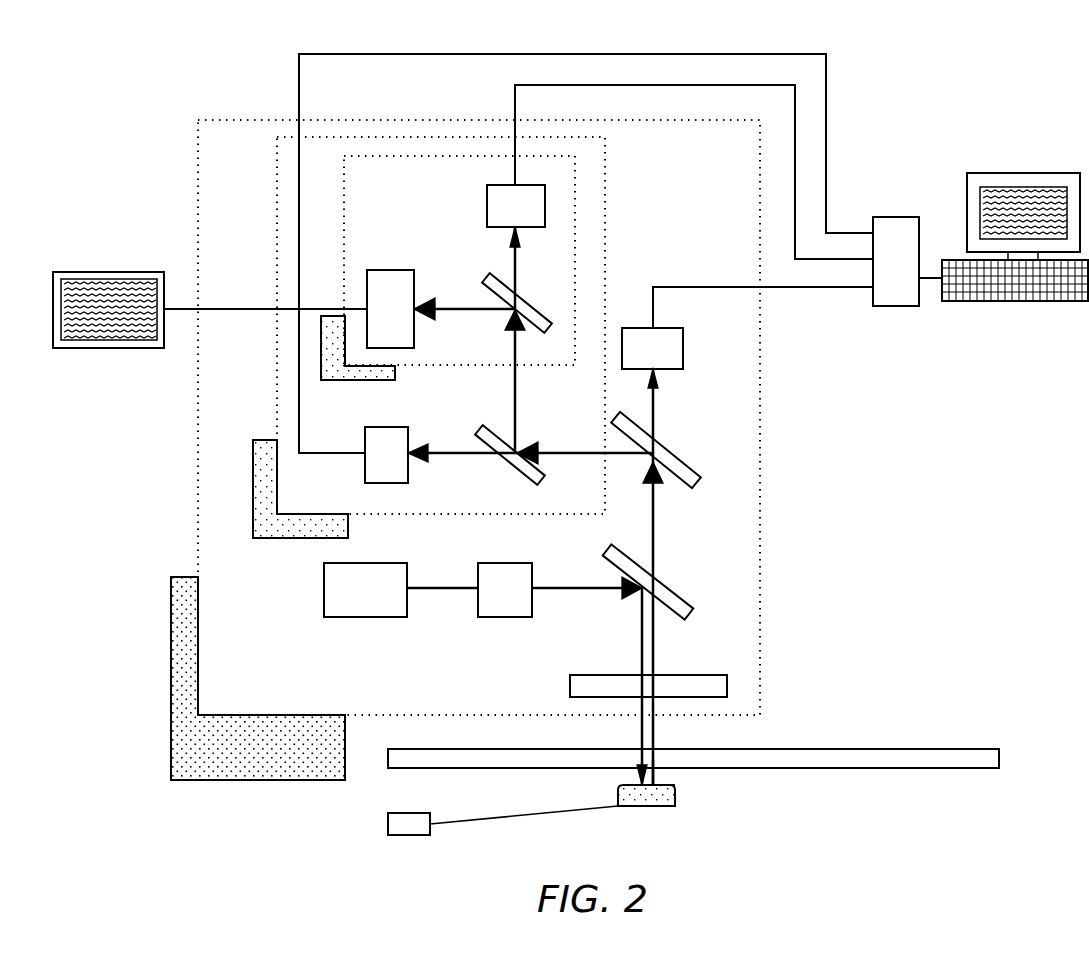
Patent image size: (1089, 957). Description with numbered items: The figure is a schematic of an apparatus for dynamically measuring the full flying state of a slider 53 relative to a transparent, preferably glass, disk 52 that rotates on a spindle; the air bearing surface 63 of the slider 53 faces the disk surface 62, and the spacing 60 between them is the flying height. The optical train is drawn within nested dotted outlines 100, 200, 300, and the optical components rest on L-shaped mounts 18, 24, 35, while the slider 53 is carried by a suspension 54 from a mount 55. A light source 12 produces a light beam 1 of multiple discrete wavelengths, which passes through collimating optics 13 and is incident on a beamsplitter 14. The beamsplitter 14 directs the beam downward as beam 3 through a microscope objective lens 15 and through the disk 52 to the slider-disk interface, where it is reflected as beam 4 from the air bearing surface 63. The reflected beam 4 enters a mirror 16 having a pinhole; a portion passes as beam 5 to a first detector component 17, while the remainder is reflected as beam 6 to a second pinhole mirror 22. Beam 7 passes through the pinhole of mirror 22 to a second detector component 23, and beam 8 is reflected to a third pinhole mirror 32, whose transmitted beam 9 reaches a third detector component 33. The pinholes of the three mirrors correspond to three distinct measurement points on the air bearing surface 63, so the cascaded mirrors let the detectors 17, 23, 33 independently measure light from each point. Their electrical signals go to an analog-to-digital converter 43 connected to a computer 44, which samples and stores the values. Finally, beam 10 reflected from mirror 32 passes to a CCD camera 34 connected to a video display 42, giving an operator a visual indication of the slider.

The light beam 1 is at (440, 597).
The incident beam 3 is at (640, 635).
The reflected light beam 4 is at (656, 520).
The light beam 5 is at (657, 407).
The light beam 6 is at (552, 452).
The light beam 7 is at (460, 452).
The light beam 8 is at (512, 380).
The transmitted light beam 9 is at (513, 264).
The light beam 10 is at (482, 312).
The light source 12 is at (328, 610).
The collimating optics 13 is at (515, 622).
The beamsplitter 14 is at (686, 597).
The microscope objective lens 15 is at (667, 680).
The mirror 16 is at (690, 465).
The first detector component 17 is at (677, 352).
The mounting bracket 18 is at (177, 740).
The mirror 22 is at (518, 468).
The second detector component 23 is at (372, 473).
The mounting bracket 24 is at (270, 540).
The mirror 32 is at (528, 310).
The third detector component 33 is at (488, 197).
The CCD camera 34 is at (377, 272).
The mounting bracket 35 is at (330, 382).
The video display 42 is at (102, 272).
The analog-to-digital converter 43 is at (891, 306).
The computer 44 is at (1033, 301).
The disk 52 is at (908, 750).
The slider 53 is at (668, 807).
The suspension 54 is at (550, 815).
The mount 55 is at (385, 825).
The spacing 60 is at (663, 773).
The disk surface 62 is at (925, 770).
The air bearing surface 63 is at (675, 785).
The optical measurement system 100 is at (183, 145).
The optical subsystem 200 is at (263, 173).
The optical subsystem 300 is at (325, 165).